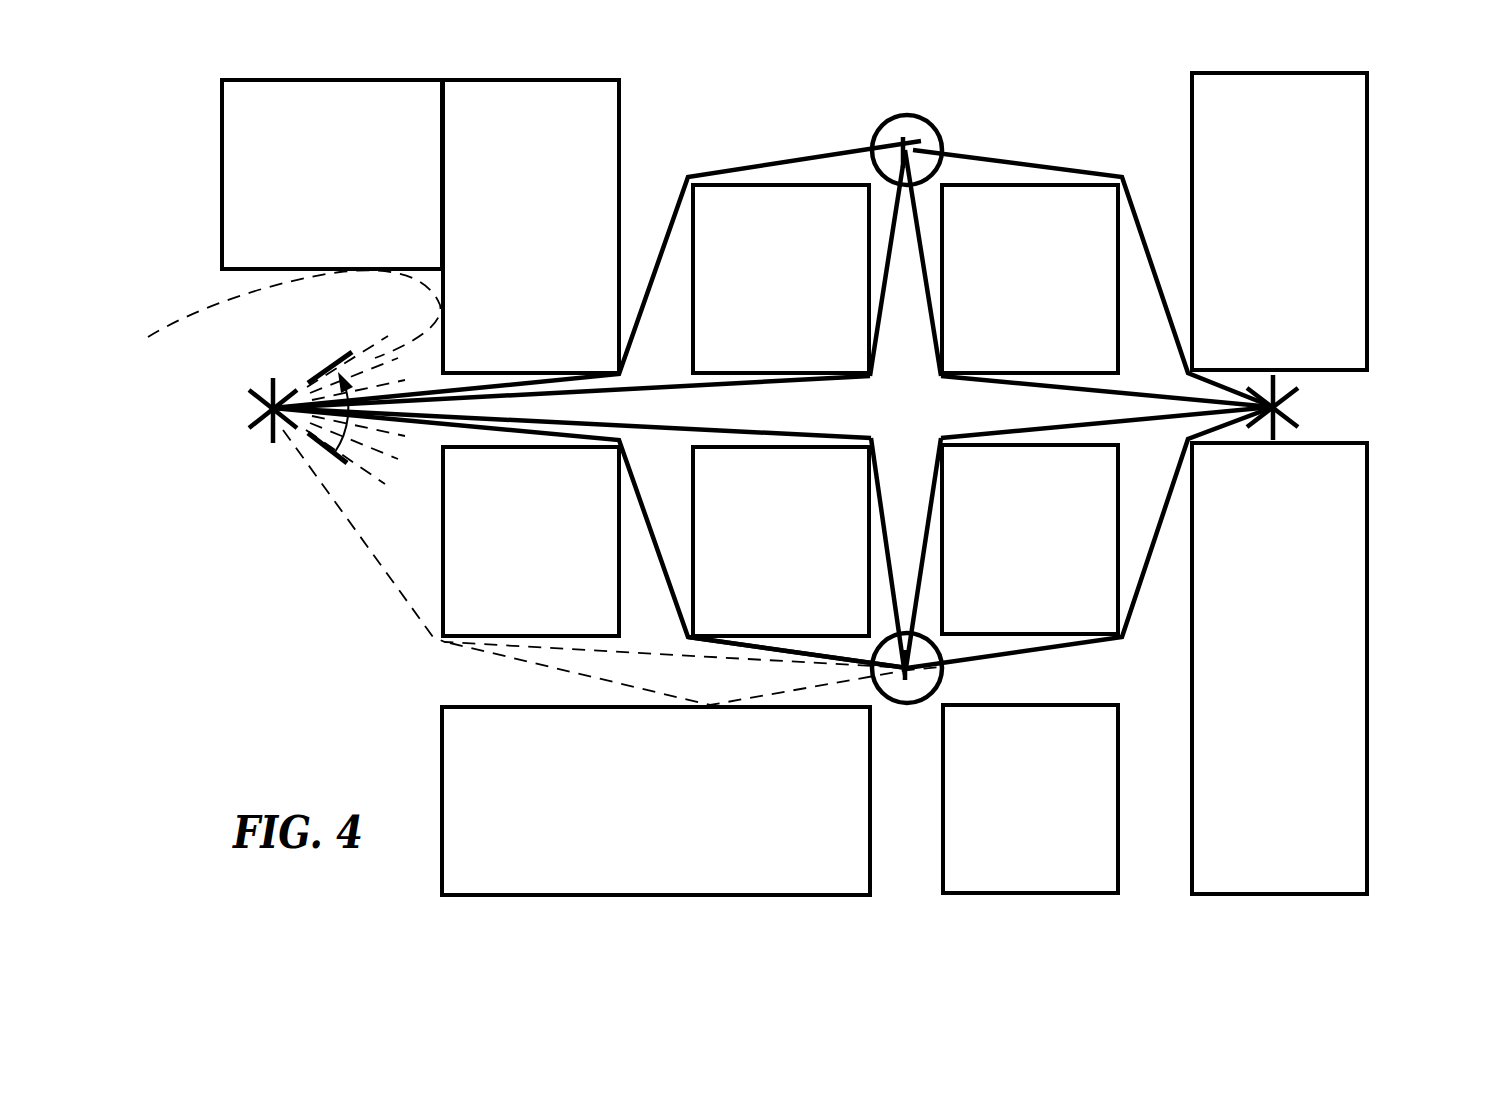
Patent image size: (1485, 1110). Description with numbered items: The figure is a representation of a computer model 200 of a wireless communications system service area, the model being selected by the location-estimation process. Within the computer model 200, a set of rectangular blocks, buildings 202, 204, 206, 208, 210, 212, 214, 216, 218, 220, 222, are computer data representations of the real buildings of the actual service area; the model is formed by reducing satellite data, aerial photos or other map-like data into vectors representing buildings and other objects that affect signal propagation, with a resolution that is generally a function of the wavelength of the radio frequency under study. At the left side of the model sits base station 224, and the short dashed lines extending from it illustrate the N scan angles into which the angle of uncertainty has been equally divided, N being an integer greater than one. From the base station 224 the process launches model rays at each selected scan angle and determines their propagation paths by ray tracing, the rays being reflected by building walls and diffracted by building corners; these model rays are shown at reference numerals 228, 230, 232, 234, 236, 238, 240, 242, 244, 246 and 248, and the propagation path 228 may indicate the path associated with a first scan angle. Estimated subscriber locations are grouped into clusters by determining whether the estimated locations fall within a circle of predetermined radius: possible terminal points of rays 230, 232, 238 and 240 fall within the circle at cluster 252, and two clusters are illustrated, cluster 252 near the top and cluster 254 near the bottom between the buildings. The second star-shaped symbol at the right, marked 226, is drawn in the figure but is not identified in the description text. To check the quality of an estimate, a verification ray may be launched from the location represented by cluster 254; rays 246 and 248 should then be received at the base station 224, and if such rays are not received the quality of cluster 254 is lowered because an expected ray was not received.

The computer model 200 is at (1419, 168).
The building 202 is at (332, 174).
The building 204 is at (531, 226).
The building 206 is at (781, 279).
The building 208 is at (1030, 279).
The building 210 is at (1279, 221).
The building 212 is at (531, 541).
The building 214 is at (781, 541).
The building 216 is at (1030, 539).
The building 218 is at (1279, 668).
The building 220 is at (656, 801).
The building 222 is at (1030, 799).
The base station 224 is at (261, 442).
The light source 226 is at (1318, 405).
The propagation path 228 is at (385, 340).
The model ray 230 is at (736, 167).
The model ray 232 is at (724, 387).
The model ray 234 is at (766, 431).
The model ray 236 is at (660, 462).
The model ray 238 is at (1161, 312).
The model ray 240 is at (975, 384).
The model ray 242 is at (987, 430).
The model ray 244 is at (1154, 522).
The model ray 246 is at (673, 657).
The model ray 248 is at (527, 658).
The cluster 252 is at (945, 138).
The cluster 254 is at (922, 704).